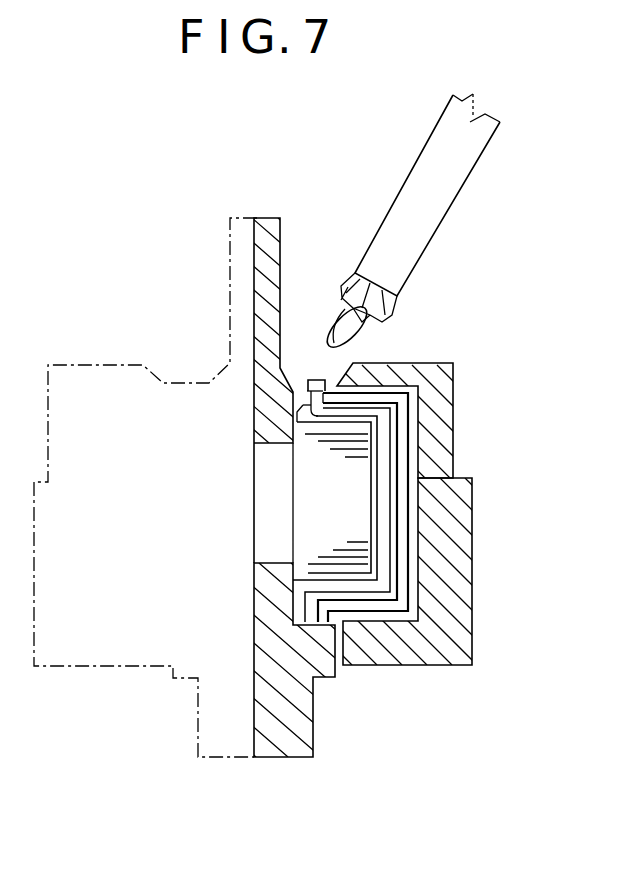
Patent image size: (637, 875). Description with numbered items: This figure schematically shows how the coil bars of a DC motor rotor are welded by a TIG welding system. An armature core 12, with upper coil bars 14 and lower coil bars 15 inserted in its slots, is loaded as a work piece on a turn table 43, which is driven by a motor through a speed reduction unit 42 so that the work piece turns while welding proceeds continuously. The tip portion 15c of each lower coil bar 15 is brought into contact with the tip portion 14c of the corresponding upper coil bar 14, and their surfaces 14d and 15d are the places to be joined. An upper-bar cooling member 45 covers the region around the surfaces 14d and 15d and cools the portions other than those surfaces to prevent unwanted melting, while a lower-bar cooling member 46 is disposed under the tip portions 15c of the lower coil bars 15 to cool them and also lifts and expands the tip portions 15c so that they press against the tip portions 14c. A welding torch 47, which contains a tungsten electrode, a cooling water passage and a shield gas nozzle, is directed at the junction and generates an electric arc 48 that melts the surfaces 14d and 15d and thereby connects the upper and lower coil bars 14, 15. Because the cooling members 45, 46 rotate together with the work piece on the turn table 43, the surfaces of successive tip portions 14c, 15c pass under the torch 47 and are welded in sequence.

The armature core 12 is at (308, 480).
The upper coil bar 14 is at (400, 457).
The tip portion of upper coil bar 14c is at (307, 403).
The surface of upper coil bar tip portion 14d is at (322, 381).
The lower coil bar 15 is at (380, 514).
The tip portion of lower coil bar 15c is at (307, 392).
The surface of lower coil bar tip portion 15d is at (313, 380).
The speed reduction unit 42 is at (300, 704).
The turn table 43 is at (465, 562).
The upper-bar cooling member 45 is at (445, 418).
The lower-bar cooling member 46 is at (262, 219).
The welding torch 47 is at (448, 195).
The electric arc 48 is at (368, 335).